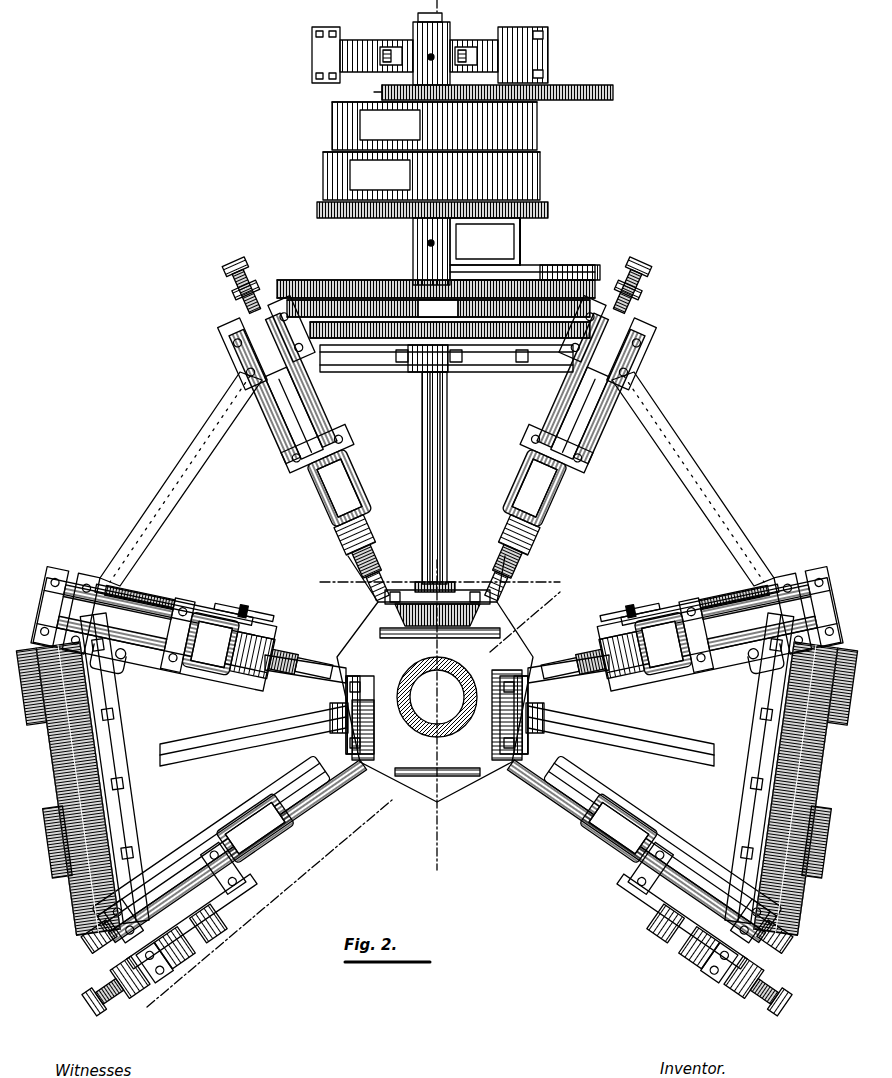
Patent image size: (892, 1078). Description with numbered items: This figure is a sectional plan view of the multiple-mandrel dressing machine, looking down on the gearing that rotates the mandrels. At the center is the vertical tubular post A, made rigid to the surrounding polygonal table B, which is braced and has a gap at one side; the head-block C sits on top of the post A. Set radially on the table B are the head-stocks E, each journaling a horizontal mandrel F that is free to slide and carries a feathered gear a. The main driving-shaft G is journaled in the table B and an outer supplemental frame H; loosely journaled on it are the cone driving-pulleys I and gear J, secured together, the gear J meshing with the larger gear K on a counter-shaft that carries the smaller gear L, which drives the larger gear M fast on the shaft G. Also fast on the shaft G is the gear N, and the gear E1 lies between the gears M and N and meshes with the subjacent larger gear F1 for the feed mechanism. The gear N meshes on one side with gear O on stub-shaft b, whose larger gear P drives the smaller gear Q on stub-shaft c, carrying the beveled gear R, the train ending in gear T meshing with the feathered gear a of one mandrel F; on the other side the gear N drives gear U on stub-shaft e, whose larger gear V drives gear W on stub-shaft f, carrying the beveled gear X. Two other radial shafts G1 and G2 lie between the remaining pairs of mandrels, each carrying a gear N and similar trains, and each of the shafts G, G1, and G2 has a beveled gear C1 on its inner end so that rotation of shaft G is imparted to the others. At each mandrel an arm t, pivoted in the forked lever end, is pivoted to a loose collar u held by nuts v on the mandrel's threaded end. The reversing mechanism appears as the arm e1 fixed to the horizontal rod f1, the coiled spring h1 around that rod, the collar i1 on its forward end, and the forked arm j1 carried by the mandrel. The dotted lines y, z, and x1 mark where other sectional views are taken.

The central vertical tubular post A is at (435, 679).
The polygonal table B is at (185, 470).
The head-block C is at (384, 672).
The beveled gear C1 is at (458, 595).
The head-stock E is at (282, 438).
The gear E1 is at (458, 258).
The mandrel F is at (318, 478).
The gear F1 is at (383, 280).
The main driving-shaft G is at (450, 25).
The radial shaft G1 is at (250, 742).
The radial shaft G2 is at (668, 742).
The supplemental frame H is at (360, 48).
The cone driving-pulleys I is at (431, 151).
The gear J is at (368, 91).
The gear K is at (594, 84).
The gear L is at (550, 203).
The gear M is at (350, 280).
The gear N is at (482, 372).
The gear O is at (372, 372).
The gear P is at (362, 286).
The gear Q is at (315, 280).
The beveled gear R is at (356, 372).
The gear T is at (792, 824).
The gear U is at (504, 372).
The gear V is at (550, 266).
The gear W is at (575, 270).
The beveled gear X is at (530, 372).
The feathered gear a is at (222, 364).
The stub-shaft b is at (330, 300).
The stub-shaft c is at (288, 280).
The stub-shaft e is at (800, 846).
The stub-shaft f is at (548, 290).
The arm t is at (218, 316).
The loose collar u is at (250, 290).
The nuts v is at (235, 292).
The arm e1 is at (150, 574).
The coiled spring h1 is at (178, 574).
The collar i1 is at (570, 528).
The arm j1 is at (560, 500).
The horizontal rod f1 is at (568, 516).
The section line x' x' x1 is at (441, 581).
The section line y y is at (422, 6).
The section line z z is at (346, 809).